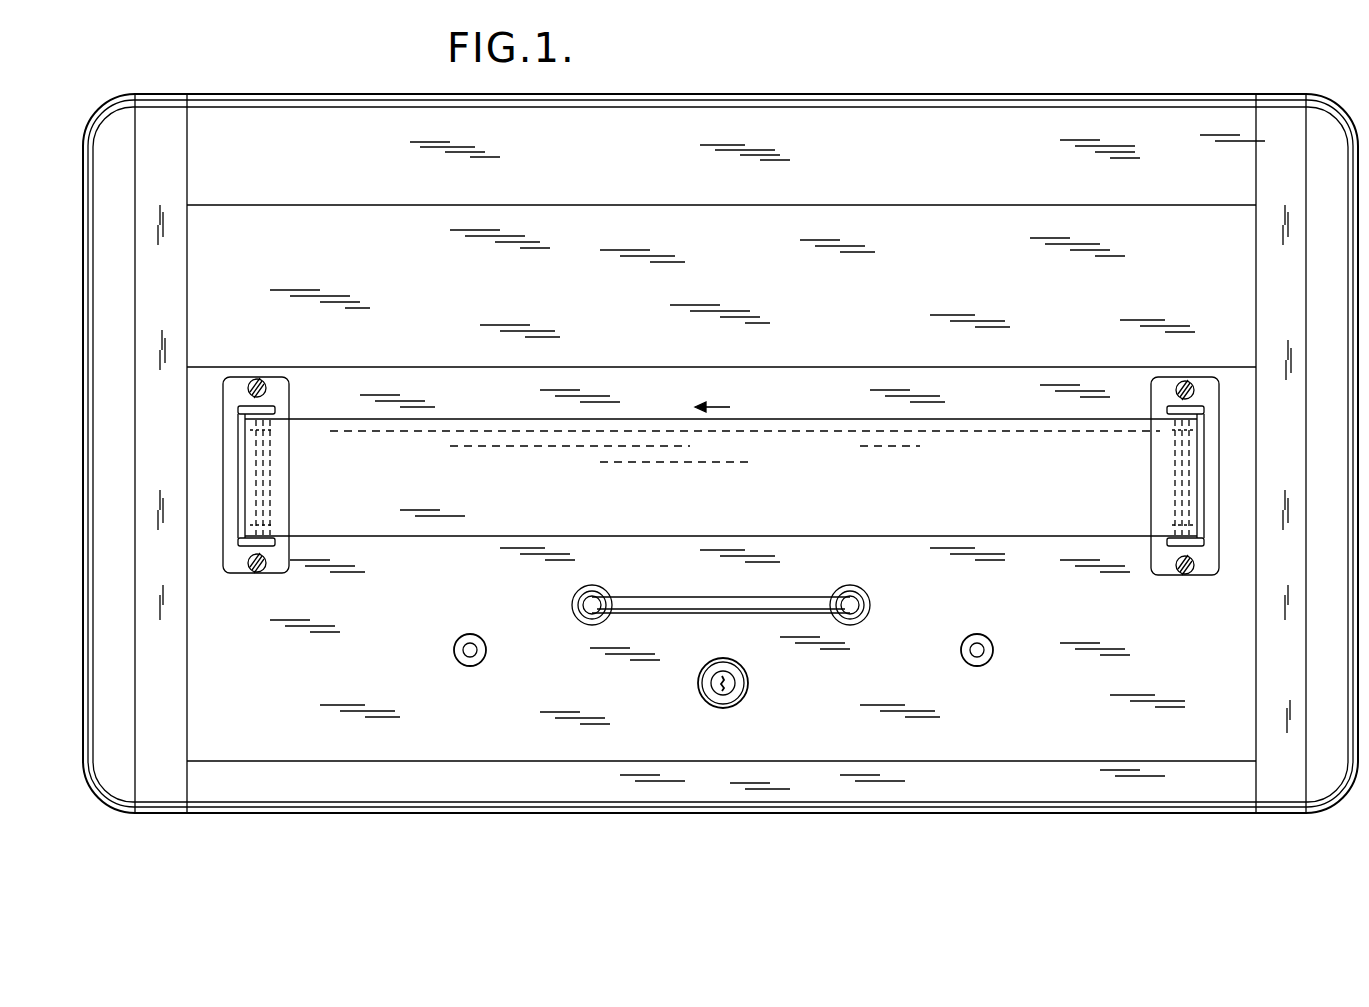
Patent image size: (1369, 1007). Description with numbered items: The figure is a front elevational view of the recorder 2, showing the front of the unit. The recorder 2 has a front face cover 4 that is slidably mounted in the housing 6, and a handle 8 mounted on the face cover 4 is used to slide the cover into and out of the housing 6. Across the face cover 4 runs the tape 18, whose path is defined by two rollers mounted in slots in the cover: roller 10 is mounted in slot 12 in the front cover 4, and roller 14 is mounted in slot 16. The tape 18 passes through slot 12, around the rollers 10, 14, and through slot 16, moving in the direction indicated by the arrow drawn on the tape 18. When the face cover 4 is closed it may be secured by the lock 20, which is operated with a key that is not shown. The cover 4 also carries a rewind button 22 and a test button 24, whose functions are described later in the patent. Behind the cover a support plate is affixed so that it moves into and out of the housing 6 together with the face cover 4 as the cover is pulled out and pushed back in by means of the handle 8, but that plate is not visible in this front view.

The recorder 2 is at (1190, 89).
The front face cover 4 is at (1233, 468).
The housing 6 is at (1320, 118).
The handle 8 is at (658, 600).
The roller 10 is at (1195, 408).
The slot 12 is at (1170, 408).
The roller 14 is at (243, 408).
The slot 16 is at (270, 408).
The tape 18 is at (778, 445).
The lock 20 is at (740, 683).
The rewind button 22 is at (454, 650).
The test button 24 is at (994, 650).